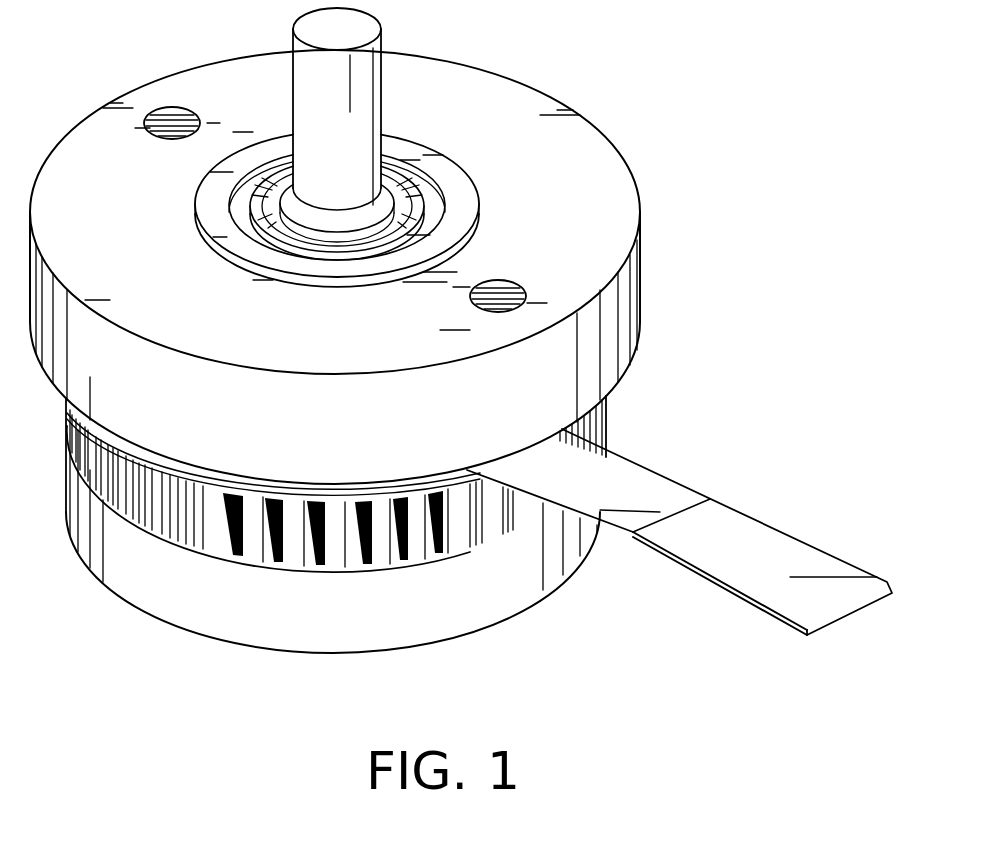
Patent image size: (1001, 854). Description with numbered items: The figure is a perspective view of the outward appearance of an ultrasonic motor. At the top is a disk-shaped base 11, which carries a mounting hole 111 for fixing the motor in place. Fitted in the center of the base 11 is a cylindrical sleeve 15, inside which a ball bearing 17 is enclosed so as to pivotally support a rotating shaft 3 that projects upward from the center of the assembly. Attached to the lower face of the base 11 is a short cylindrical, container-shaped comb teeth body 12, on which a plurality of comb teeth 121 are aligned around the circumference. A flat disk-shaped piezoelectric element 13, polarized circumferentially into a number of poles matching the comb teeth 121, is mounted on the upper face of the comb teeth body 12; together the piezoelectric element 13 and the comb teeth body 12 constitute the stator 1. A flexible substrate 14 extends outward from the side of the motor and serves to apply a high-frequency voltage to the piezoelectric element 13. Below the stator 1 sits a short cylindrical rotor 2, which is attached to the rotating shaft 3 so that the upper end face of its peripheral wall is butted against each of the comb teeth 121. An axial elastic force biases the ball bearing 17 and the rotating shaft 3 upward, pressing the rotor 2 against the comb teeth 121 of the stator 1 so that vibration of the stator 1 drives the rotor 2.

The stator 1 is at (366, 262).
The base 11 is at (533, 104).
The mounting hole 111 is at (180, 110).
The sleeve 15 is at (274, 144).
The ball bearing 17 is at (433, 200).
The rotating shaft 3 is at (371, 112).
The piezoelectric element 13 is at (300, 498).
The comb teeth body 12 is at (334, 514).
The comb teeth 121 is at (210, 533).
The rotor 2 is at (523, 580).
The flexible substrate 14 is at (652, 482).